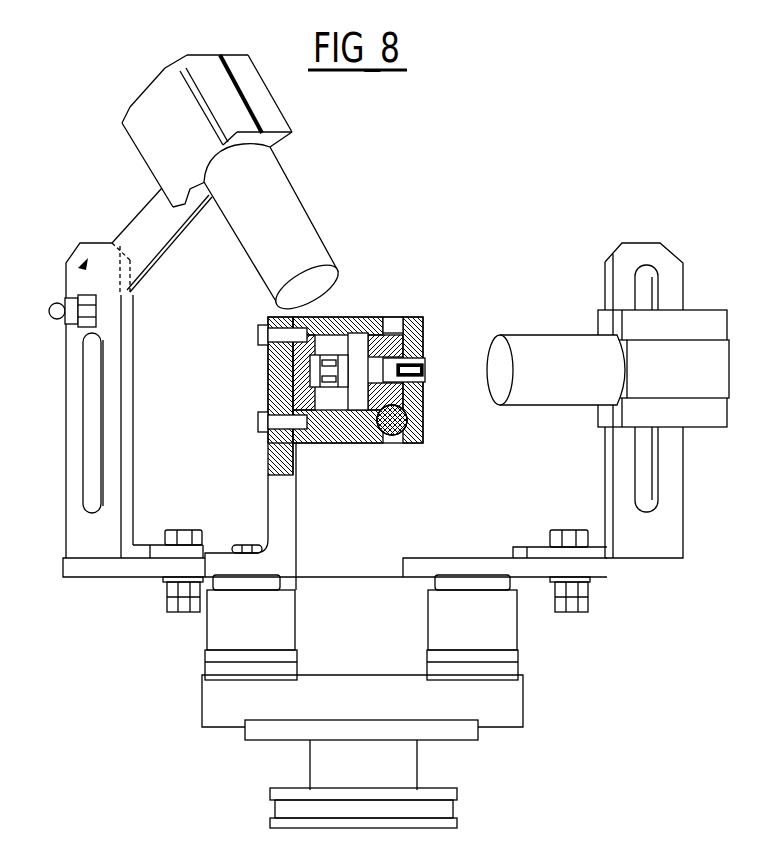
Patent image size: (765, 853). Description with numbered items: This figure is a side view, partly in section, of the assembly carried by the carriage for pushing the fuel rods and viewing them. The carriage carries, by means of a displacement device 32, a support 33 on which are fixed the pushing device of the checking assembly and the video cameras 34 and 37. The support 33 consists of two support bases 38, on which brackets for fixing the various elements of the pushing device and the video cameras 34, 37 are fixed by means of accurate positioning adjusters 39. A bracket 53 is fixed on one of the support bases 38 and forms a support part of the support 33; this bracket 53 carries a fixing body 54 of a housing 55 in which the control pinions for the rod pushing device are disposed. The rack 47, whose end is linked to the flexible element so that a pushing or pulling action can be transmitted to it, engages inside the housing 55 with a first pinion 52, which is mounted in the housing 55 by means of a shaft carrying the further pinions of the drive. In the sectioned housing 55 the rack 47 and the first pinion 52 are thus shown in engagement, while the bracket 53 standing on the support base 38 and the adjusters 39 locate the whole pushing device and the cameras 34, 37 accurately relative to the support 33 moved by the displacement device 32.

The displacement device 32 is at (455, 766).
The support 33 is at (534, 582).
The video camera 34 is at (298, 225).
The video camera 37 is at (536, 347).
The support base 38 is at (296, 632).
The accurate positioning adjuster 39 is at (280, 588).
The rack 47 is at (403, 440).
The first pinion 52 is at (408, 395).
The bracket 53 is at (291, 512).
The fixing body 54 is at (305, 316).
The housing 55 is at (411, 317).